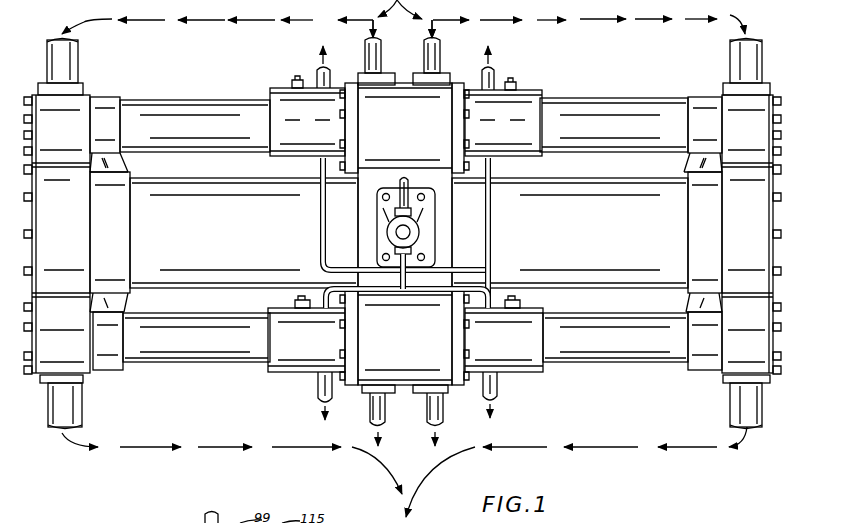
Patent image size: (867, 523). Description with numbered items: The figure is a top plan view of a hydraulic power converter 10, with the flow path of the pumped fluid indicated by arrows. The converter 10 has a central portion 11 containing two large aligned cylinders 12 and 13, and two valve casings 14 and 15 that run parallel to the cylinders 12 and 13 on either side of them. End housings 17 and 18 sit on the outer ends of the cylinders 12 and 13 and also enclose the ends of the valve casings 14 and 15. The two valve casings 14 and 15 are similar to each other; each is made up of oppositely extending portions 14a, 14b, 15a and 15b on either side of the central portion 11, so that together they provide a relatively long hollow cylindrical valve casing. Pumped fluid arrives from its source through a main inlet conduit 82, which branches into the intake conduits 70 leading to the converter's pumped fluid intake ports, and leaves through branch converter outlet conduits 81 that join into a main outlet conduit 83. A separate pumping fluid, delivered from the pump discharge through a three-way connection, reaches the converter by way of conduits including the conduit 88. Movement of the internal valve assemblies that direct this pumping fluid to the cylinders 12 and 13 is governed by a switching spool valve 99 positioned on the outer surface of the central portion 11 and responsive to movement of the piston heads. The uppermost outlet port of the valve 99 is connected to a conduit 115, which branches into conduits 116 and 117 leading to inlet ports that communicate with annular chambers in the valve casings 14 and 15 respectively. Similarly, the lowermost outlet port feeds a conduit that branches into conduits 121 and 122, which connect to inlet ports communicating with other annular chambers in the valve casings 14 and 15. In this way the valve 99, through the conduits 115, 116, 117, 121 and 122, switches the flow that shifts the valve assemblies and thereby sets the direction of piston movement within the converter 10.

The hydraulic power converter 10 is at (223, 76).
The central portion 11 is at (434, 135).
The cylinder 12 is at (230, 228).
The cylinder 13 is at (614, 229).
The valve casing 14 is at (525, 88).
The oppositely extending portion 14a is at (232, 137).
The oppositely extending portion 14b is at (635, 137).
The valve casing 15 is at (286, 377).
The oppositely extending portion 15a is at (245, 349).
The oppositely extending portion 15b is at (630, 349).
The end housing 17 is at (66, 220).
The end housing 18 is at (760, 220).
The intake conduit 70 is at (140, 25).
The branch converter outlet conduit 81 is at (135, 447).
The main inlet conduit 82 is at (400, 2).
The main outlet conduit 83 is at (410, 516).
The conduit 88 is at (403, 177).
The switching spool valve 99 is at (382, 232).
The conduit 115 is at (410, 258).
The conduit 116 is at (491, 234).
The conduit 117 is at (318, 290).
The conduit 121 is at (320, 222).
The conduit 122 is at (491, 290).